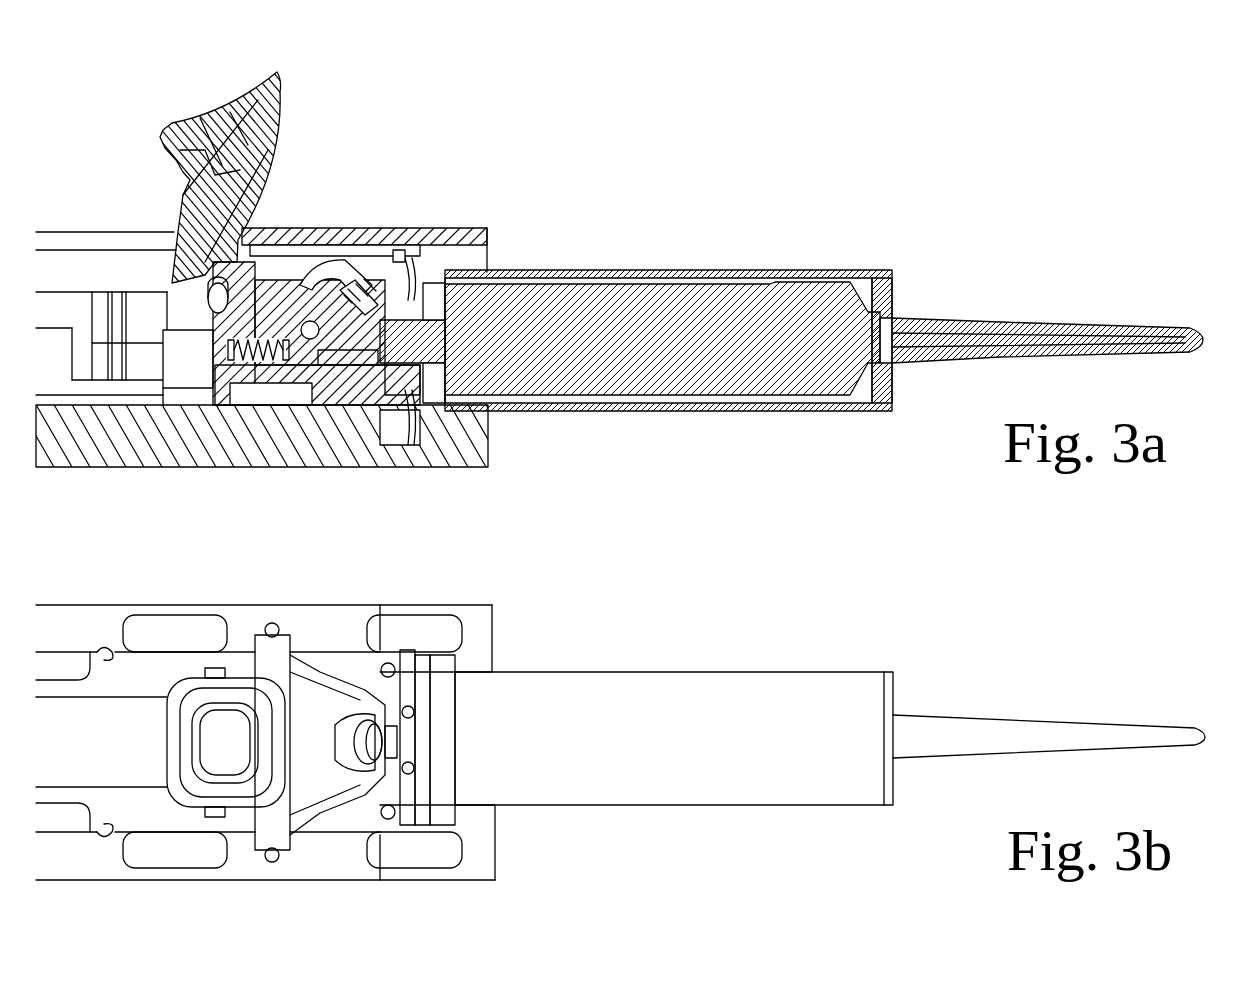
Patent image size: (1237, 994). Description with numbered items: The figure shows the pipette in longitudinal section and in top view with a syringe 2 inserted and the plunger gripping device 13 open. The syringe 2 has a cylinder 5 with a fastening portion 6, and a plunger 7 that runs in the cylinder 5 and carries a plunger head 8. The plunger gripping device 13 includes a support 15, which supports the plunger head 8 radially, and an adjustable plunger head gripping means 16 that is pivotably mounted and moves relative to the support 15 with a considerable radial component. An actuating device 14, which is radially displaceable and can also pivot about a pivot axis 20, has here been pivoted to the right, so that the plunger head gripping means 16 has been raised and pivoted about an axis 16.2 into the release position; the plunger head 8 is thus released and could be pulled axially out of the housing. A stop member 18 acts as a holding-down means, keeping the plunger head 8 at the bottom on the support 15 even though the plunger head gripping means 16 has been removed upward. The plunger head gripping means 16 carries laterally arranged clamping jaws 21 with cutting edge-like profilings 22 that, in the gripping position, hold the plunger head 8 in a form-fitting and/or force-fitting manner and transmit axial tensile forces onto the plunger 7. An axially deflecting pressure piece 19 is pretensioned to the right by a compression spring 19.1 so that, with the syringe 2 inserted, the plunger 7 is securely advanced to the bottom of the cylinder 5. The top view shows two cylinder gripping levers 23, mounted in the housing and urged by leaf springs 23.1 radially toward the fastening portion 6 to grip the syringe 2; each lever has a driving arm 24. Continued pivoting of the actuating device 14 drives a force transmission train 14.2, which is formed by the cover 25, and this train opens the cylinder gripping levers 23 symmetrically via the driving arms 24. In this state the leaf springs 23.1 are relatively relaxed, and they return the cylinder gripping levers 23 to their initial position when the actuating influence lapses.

In FIG. 3A, the syringe 2 is at (824, 306).
In FIG. 3B, the syringe 2 is at (730, 618).
In FIG. 3A, the cylinder 5 is at (878, 410).
In FIG. 3B, the fastening portion 6 is at (448, 673).
In FIG. 3A, the plunger 7 is at (807, 272).
In FIG. 3A, the plunger head 8 is at (390, 440).
In FIG. 3A, the plunger gripping device 13 is at (360, 195).
In FIG. 3A, the actuating device 14 is at (155, 103).
In FIG. 3B, the force transmission train 14.2 is at (290, 850).
In FIG. 3A, the support 15 is at (360, 440).
In FIG. 3A, the plunger head gripping means 16 is at (342, 240).
In FIG. 3A, the axis 16.2 is at (250, 440).
In FIG. 3A, the stop member 18 is at (335, 440).
In FIG. 3A, the axially deflecting pressure piece 19 is at (300, 440).
In FIG. 3A, the compression spring 19.1 is at (230, 405).
In FIG. 3A, the pivot axis 20 is at (172, 235).
In FIG. 3B, the pivot axis 20 is at (226, 742).
In FIG. 3A, the clamping jaws 21 is at (382, 250).
In FIG. 3A, the profilings 22 is at (432, 250).
In FIG. 3B, the cylinder gripping levers 23 is at (433, 628).
In FIG. 3B, the leaf spring 23.1 is at (172, 865).
In FIG. 3B, the driving arm 24 is at (385, 860).
In FIG. 3B, the cover 25 is at (358, 743).